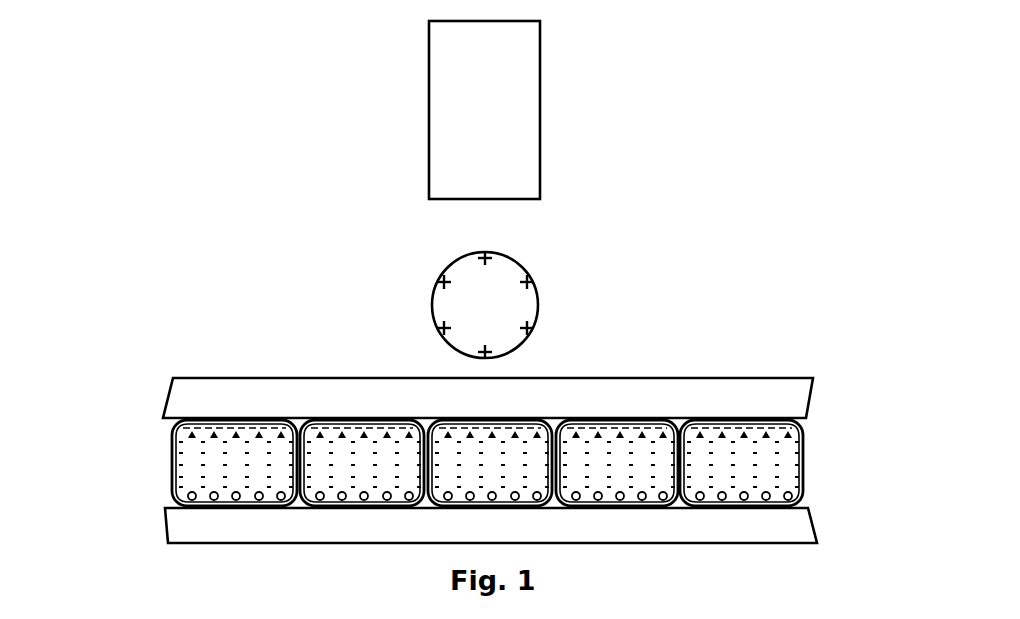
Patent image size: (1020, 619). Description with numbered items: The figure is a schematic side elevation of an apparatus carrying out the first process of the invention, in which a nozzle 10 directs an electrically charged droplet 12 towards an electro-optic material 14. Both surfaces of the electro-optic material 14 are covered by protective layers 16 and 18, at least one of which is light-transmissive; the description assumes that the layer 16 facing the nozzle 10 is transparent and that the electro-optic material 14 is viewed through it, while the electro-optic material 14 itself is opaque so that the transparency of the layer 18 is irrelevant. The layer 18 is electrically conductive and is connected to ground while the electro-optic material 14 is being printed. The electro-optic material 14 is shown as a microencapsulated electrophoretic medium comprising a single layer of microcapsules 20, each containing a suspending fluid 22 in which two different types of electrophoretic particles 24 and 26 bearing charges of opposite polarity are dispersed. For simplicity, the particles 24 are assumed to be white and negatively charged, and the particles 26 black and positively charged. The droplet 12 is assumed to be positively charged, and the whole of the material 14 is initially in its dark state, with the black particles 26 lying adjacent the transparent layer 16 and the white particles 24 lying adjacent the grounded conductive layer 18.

The nozzle 10 is at (503, 125).
The electrically charged droplet 12 is at (504, 316).
The electro-optic material 14 is at (128, 463).
The protective layer 16 is at (623, 397).
The protective layer 18 is at (625, 528).
The microcapsules 20 is at (810, 410).
The suspending fluid 22 is at (760, 463).
The electrophoretic particles 24 is at (783, 492).
The electrophoretic particles 26 is at (798, 425).